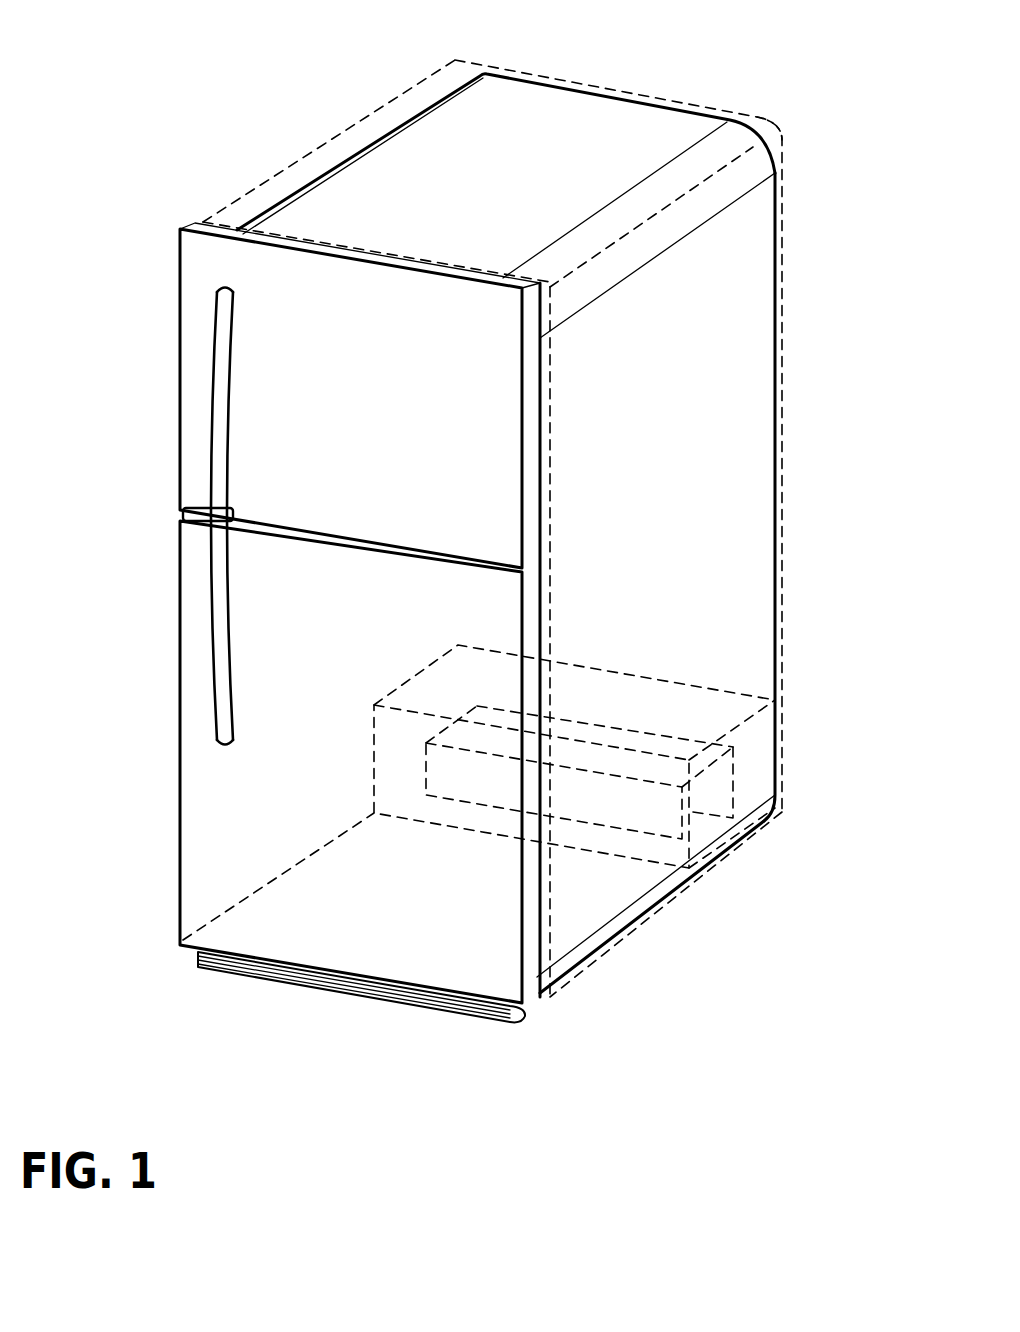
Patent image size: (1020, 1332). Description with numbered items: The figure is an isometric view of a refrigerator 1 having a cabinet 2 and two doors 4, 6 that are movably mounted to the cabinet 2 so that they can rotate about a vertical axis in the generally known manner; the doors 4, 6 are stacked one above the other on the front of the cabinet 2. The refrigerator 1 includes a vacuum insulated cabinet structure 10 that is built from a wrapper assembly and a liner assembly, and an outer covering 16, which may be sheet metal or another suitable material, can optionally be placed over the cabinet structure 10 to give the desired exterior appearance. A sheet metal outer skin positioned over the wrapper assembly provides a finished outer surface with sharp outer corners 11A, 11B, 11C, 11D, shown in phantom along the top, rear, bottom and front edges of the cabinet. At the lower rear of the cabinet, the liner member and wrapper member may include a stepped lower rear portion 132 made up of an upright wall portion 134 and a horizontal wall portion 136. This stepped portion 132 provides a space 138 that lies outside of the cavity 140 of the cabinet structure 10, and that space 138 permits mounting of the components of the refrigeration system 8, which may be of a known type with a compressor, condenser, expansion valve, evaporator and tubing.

The refrigerator 1 is at (578, 70).
The cabinet 2 is at (775, 395).
The door 4 is at (180, 398).
The door 6 is at (178, 810).
The refrigeration system 8 is at (683, 703).
The vacuum insulated cabinet structure 10 is at (632, 98).
The sharp outer corner 11A is at (363, 120).
The sharp outer corner 11B is at (677, 200).
The sharp outer corner 11C is at (650, 920).
The sharp outer corner 11D is at (240, 900).
The outer covering 16 is at (752, 118).
The stepped lower rear portion 132 is at (745, 778).
The upright wall portion 134 is at (748, 830).
The horizontal wall portion 136 is at (752, 718).
The space 138 is at (748, 745).
The cavity 140 is at (665, 510).